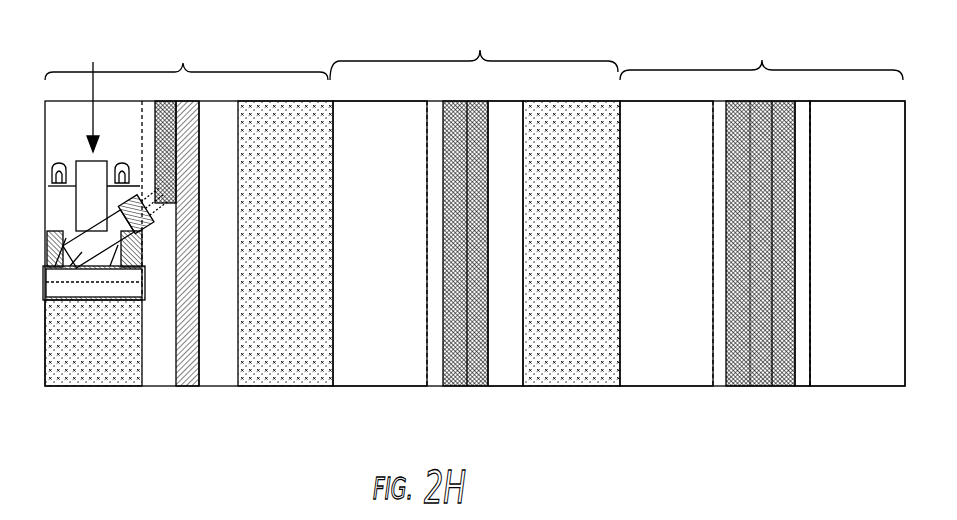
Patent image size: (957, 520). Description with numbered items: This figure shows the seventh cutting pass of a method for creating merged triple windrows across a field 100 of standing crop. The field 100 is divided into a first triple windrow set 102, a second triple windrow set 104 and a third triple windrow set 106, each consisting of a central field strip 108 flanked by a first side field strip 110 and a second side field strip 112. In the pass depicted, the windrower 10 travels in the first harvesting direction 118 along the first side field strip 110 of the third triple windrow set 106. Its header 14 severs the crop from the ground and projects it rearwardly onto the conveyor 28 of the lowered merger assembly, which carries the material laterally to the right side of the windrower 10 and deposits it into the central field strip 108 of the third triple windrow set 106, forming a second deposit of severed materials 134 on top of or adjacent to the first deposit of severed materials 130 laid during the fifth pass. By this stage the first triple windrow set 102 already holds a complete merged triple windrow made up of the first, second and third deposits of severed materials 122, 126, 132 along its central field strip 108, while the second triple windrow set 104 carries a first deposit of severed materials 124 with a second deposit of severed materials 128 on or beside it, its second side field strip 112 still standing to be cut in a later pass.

The field 100 is at (25, 98).
The first triple windrow set 102 is at (762, 60).
The second triple windrow set 104 is at (480, 50).
The third triple windrow set 106 is at (183, 63).
The central field strip 108 is at (227, 377).
The first side field strip 110 is at (117, 380).
The second side field strip 112 is at (307, 358).
The first harvesting direction 118 is at (95, 93).
The first deposit of severed materials 122 is at (796, 180).
The first deposit of severed materials 124 is at (485, 153).
The second deposit of severed materials 126 is at (803, 297).
The second deposit of severed materials 128 is at (442, 195).
The first deposit of severed materials 130 is at (200, 188).
The third deposit of severed materials 132 is at (727, 375).
The second deposit of severed materials 134 is at (165, 100).
The windrower 10 is at (88, 188).
The conveyor 28 is at (90, 233).
The header 14 is at (50, 287).